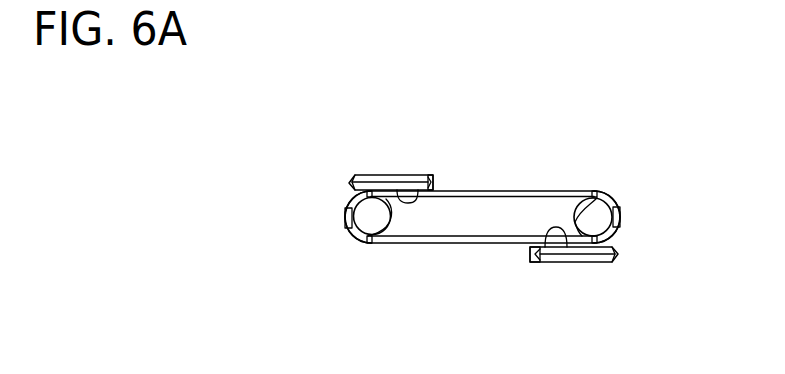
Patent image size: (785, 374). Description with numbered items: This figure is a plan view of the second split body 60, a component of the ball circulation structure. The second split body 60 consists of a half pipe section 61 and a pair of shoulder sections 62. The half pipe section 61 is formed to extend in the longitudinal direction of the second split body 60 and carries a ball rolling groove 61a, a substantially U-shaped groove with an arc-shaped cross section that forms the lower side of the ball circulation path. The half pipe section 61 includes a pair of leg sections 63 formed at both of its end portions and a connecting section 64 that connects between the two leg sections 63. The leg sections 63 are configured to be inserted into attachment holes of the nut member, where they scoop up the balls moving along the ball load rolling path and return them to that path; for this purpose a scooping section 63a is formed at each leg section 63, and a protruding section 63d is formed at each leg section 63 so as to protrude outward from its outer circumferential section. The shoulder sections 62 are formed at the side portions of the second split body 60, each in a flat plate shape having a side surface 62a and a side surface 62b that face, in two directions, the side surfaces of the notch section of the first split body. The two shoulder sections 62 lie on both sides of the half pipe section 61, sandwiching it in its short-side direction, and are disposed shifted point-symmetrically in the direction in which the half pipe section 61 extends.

The second split body 60 is at (340, 190).
The half pipe section 61 is at (463, 244).
The ball rolling groove 61a is at (518, 213).
The shoulder section 62 is at (393, 174).
The side surface 62a is at (434, 182).
The side surface 62b is at (417, 188).
The leg section 63 is at (341, 228).
The scooping section 63a is at (368, 237).
The protruding section 63d is at (345, 218).
The connecting section 64 is at (489, 191).